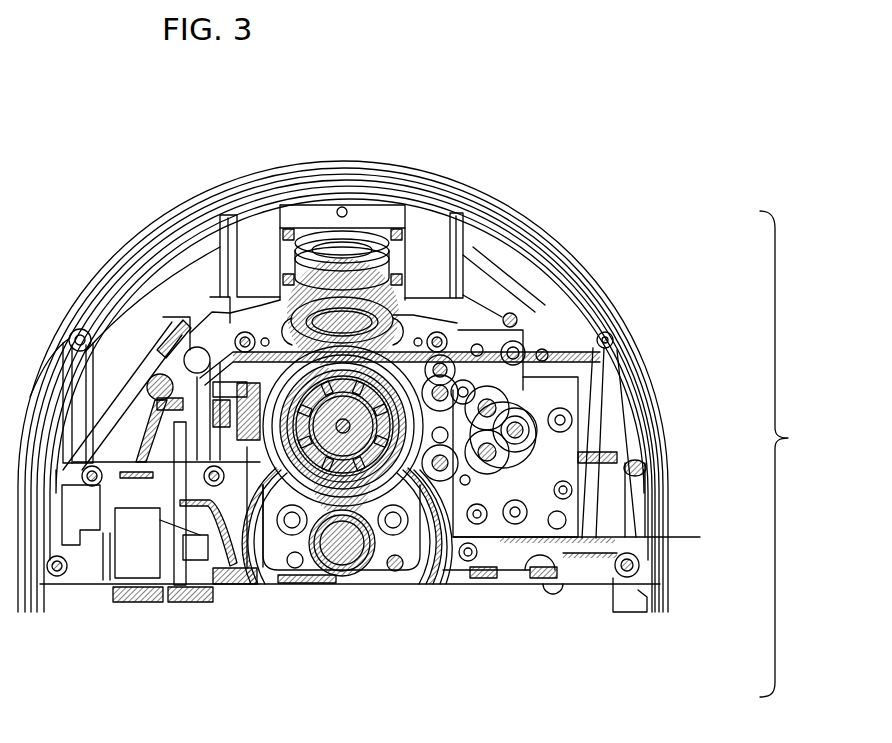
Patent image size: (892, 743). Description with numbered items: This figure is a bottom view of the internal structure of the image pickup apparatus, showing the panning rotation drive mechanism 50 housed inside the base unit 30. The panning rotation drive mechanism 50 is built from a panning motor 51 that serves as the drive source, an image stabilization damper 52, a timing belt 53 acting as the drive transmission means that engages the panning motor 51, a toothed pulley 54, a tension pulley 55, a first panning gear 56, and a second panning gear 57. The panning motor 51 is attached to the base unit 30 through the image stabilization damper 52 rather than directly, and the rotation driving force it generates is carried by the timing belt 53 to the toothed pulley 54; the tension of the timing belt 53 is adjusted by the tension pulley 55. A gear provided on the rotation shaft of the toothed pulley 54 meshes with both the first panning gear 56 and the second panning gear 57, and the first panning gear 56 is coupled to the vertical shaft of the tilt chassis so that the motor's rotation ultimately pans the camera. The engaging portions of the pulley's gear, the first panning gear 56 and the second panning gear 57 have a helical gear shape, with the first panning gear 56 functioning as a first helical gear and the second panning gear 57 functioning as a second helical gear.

The base unit 30 is at (132, 236).
The panning rotation drive mechanism 50 is at (434, 451).
The panning motor 51 is at (455, 428).
The image stabilization damper 52 is at (617, 537).
The timing belt 53 is at (523, 390).
The toothed pulley 54 is at (450, 372).
The tension pulley 55 is at (505, 415).
The first panning gear 56 is at (453, 585).
The second panning gear 57 is at (423, 585).